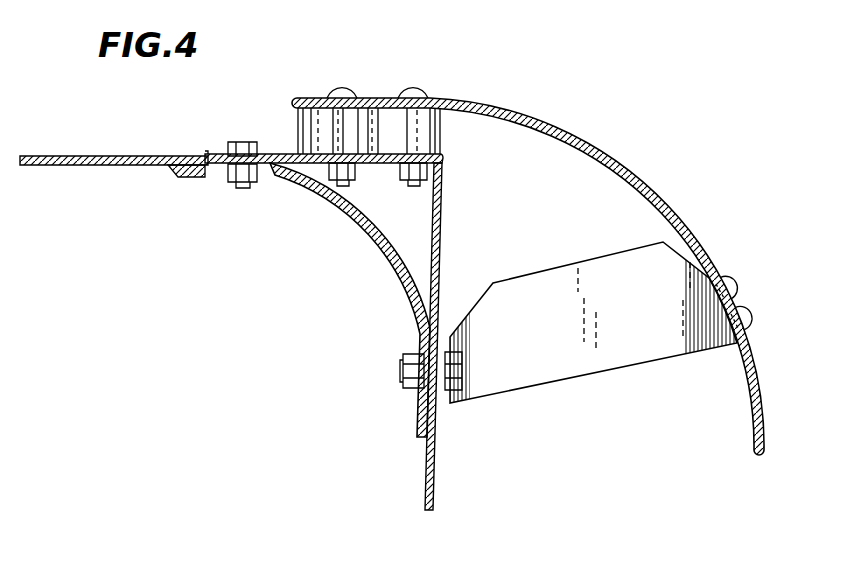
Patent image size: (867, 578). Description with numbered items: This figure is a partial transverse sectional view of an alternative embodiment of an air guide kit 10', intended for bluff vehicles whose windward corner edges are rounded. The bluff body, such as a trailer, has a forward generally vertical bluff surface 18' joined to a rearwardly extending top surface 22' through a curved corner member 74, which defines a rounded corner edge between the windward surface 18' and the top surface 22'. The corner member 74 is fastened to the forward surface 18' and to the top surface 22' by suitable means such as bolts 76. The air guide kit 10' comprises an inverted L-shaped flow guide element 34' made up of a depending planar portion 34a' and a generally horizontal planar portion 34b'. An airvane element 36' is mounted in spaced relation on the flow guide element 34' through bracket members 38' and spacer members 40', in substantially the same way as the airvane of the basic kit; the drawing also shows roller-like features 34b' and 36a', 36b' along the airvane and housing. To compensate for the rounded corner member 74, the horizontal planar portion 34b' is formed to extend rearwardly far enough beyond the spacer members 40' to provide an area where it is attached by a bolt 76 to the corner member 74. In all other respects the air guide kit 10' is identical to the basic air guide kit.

The air guide kit 10' is at (721, 128).
The forward generally vertical bluff surface 18' is at (463, 479).
The rearwardly extending top surface 22' is at (114, 141).
The inverted L-shaped flow guide element 34' is at (464, 336).
The depending planar portion 34a' is at (476, 257).
The generally horizontal planar portion 34b' is at (368, 85).
The airvane element 36' is at (528, 276).
The shell guide roller 36a' is at (748, 280).
The shell roller 36b' is at (447, 79).
The bracket member 38' is at (593, 326).
The spacer member 40' is at (324, 134).
The curved corner member 74 is at (381, 228).
The bolt 76 is at (238, 189).